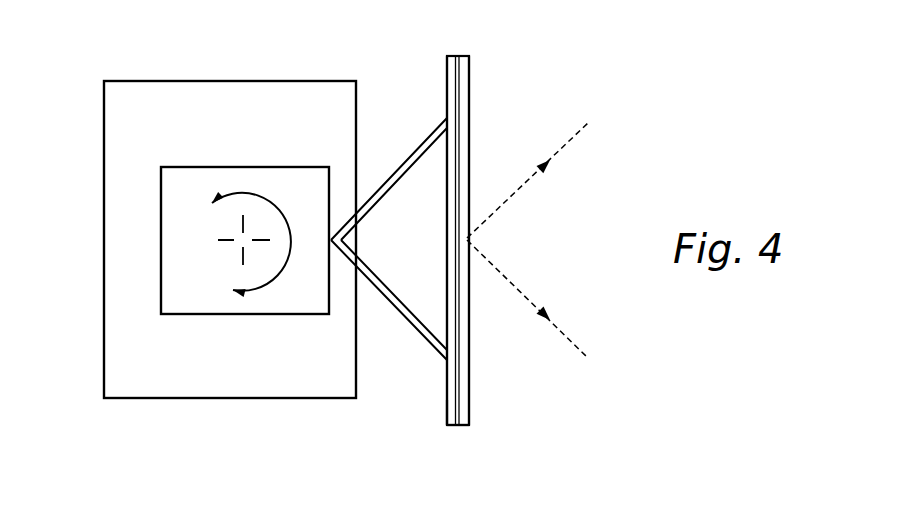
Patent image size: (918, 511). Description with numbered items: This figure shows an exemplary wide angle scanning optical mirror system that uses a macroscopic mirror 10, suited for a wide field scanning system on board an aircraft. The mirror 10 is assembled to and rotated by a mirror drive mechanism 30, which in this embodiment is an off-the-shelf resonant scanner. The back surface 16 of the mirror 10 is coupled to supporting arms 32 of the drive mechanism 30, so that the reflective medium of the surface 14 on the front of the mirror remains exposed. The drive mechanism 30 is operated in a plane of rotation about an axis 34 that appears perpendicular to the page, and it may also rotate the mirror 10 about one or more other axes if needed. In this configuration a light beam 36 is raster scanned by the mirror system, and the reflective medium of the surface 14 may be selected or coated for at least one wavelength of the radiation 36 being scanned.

The macroscopic mirror 10 is at (489, 218).
The surface 14 is at (469, 107).
The back surface 16 is at (447, 413).
The mirror drive mechanism 30 is at (104, 145).
The supporting arms 32 is at (409, 152).
The axis 34 is at (243, 240).
The light beam 36 is at (510, 280).